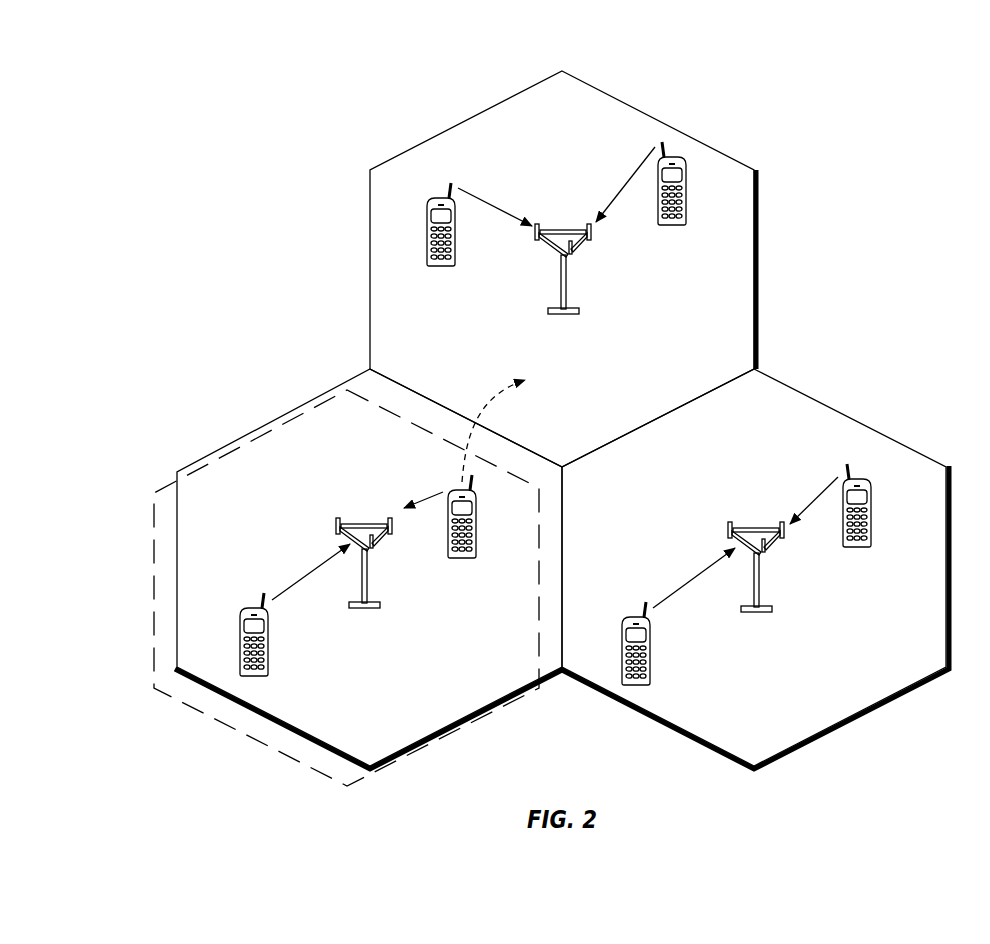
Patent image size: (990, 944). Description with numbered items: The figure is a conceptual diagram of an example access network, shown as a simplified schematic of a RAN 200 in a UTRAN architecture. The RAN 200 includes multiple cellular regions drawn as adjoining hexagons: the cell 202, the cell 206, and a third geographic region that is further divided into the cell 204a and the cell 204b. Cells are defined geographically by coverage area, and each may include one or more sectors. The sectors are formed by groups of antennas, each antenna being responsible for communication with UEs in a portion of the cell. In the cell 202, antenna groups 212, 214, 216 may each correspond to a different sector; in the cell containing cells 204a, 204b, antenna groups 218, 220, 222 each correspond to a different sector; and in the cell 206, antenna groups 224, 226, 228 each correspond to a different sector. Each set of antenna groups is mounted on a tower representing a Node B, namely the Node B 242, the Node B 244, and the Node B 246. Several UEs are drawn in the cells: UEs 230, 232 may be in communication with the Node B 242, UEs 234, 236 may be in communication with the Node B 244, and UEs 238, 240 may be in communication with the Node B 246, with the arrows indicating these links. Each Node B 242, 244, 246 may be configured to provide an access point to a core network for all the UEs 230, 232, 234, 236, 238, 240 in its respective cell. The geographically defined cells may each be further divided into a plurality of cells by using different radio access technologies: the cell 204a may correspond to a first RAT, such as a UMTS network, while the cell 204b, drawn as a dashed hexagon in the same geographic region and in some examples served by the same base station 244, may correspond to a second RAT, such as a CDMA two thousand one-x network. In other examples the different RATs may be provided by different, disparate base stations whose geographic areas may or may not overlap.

The RAN 200 is at (862, 101).
The cell 202 is at (846, 414).
The cell 204a is at (253, 428).
The cell 204b is at (154, 508).
The cell 206 is at (641, 110).
The antenna group 212 is at (729, 523).
The antenna group 214 is at (765, 552).
The antenna group 216 is at (783, 538).
The antenna group 218 is at (372, 548).
The antenna group 220 is at (391, 535).
The antenna group 222 is at (337, 520).
The antenna group 224 is at (536, 242).
The antenna group 226 is at (571, 255).
The antenna group 228 is at (589, 242).
The UE 230 is at (872, 500).
The UE 232 is at (622, 640).
The UE 234 is at (476, 512).
The UE 236 is at (242, 634).
The UE 238 is at (440, 268).
The UE 240 is at (676, 226).
The Node B 242 is at (758, 527).
The Node B 244 is at (366, 523).
The Node B 246 is at (566, 229).